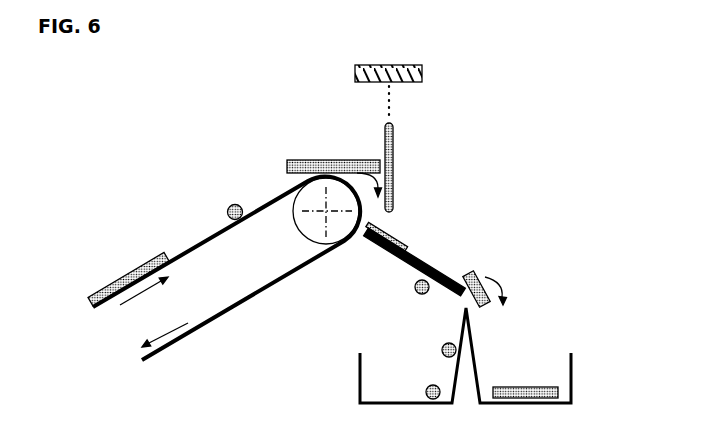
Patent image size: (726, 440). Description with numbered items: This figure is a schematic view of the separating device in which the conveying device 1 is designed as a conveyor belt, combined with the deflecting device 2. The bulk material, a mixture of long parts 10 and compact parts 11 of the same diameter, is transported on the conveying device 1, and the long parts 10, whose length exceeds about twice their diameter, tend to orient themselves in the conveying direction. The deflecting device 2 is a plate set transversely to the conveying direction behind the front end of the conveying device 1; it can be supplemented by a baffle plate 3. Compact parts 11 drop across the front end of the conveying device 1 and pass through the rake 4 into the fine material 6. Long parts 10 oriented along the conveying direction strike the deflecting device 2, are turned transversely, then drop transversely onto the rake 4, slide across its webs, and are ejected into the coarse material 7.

The conveying device 1 is at (226, 268).
The deflecting device 2 is at (432, 138).
The baffle plate 3 is at (444, 234).
The rake 4 is at (356, 301).
The fine material 6 is at (416, 355).
The coarse material 7 is at (570, 362).
The long parts 10 is at (121, 256).
The compact parts 11 is at (216, 181).